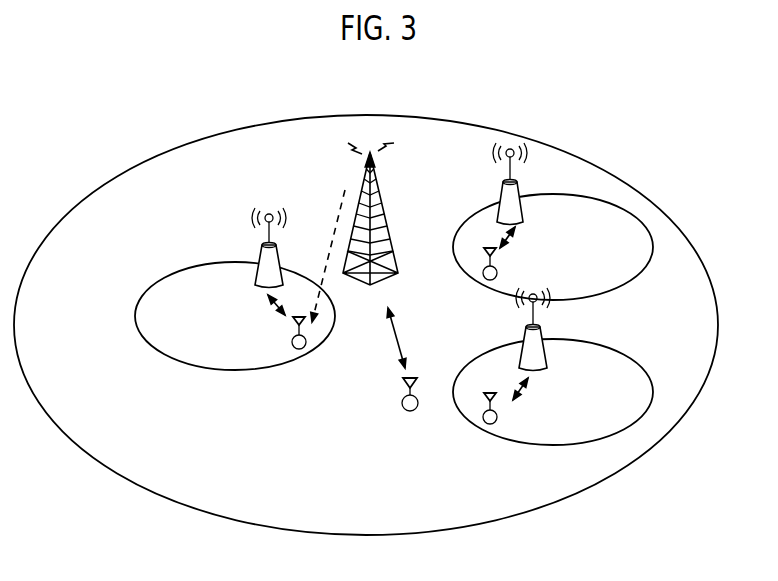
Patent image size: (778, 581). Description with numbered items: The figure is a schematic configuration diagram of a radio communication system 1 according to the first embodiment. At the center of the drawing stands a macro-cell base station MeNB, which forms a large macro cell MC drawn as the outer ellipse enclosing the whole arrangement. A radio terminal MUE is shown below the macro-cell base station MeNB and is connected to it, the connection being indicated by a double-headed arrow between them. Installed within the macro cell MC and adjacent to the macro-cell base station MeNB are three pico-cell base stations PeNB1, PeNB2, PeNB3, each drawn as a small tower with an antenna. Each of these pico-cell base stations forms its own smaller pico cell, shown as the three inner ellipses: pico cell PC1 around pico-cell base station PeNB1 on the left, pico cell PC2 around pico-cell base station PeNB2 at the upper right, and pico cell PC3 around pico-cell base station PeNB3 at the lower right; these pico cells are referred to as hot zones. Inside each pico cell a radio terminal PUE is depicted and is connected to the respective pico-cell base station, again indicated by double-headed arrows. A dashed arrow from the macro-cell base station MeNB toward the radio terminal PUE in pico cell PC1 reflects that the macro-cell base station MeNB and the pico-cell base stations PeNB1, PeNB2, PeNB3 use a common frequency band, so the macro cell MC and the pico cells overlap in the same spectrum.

The radio communication system 1 is at (390, 83).
The macro cell MC is at (97, 186).
The macro-cell base station MeNB is at (382, 192).
The radio terminal MUE is at (410, 411).
The pico cell PC1 is at (157, 281).
The pico cell PC2 is at (635, 210).
The pico cell PC3 is at (640, 360).
The pico-cell base station PeNB1 is at (262, 254).
The pico-cell base station PeNB2 is at (523, 192).
The pico-cell base station PeNB3 is at (540, 335).
The radio terminal PUE is at (291, 343).